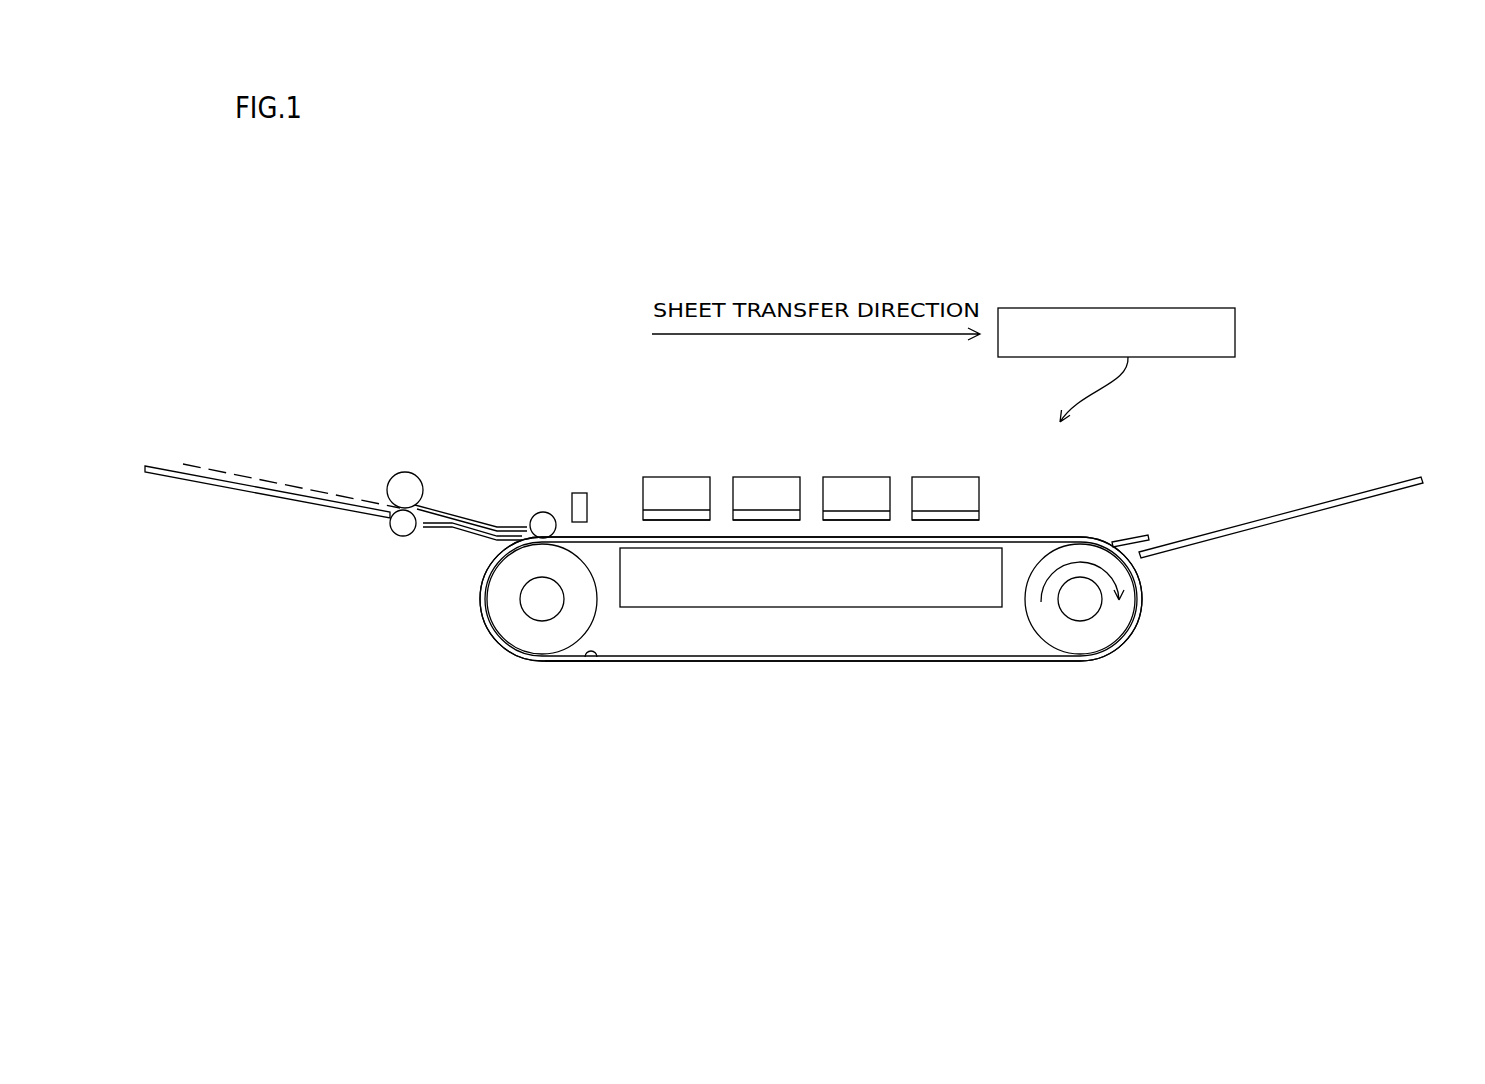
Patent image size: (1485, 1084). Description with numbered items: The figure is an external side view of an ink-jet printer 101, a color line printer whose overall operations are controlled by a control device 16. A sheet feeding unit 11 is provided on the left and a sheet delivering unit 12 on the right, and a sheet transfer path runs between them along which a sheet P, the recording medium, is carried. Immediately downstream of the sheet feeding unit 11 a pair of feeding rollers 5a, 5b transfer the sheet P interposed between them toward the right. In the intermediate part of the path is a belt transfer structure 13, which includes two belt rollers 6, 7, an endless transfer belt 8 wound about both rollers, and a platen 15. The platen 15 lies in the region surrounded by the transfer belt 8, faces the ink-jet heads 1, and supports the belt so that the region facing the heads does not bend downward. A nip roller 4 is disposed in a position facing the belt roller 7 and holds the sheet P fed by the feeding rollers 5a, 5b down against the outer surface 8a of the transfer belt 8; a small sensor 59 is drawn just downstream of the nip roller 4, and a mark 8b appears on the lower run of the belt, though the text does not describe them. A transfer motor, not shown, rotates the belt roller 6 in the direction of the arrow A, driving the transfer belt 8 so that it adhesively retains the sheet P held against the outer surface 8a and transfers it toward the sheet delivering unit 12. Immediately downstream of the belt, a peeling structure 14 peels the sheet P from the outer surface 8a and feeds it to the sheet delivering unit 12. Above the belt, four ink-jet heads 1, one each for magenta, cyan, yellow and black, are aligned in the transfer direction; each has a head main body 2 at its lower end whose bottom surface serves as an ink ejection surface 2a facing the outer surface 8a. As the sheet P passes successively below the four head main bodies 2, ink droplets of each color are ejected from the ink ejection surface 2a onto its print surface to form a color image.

The ink-jet printer 101 is at (1241, 388).
The sheet feeding unit 11 is at (270, 457).
The sheet P is at (181, 465).
The feeding roller 5a is at (404, 490).
The feeding roller 5b is at (398, 525).
The nip roller 4 is at (543, 523).
The sheet sensor 59 is at (587, 493).
The ink-jet head 1 is at (643, 462).
The head main body 2 is at (692, 515).
The ink ejection surface 2a is at (677, 520).
The belt transfer structure 13 is at (443, 652).
The transfer belt 8 is at (722, 662).
The outer surface of the transfer belt 8a is at (563, 663).
The belt mark 8b is at (593, 662).
The belt roller 7 is at (542, 633).
The belt roller 6 is at (1083, 637).
The arrow A is at (1083, 597).
The platen 15 is at (698, 583).
The peeling structure 14 is at (1135, 537).
The sheet delivering unit 12 is at (1338, 473).
The control device 16 is at (1128, 308).